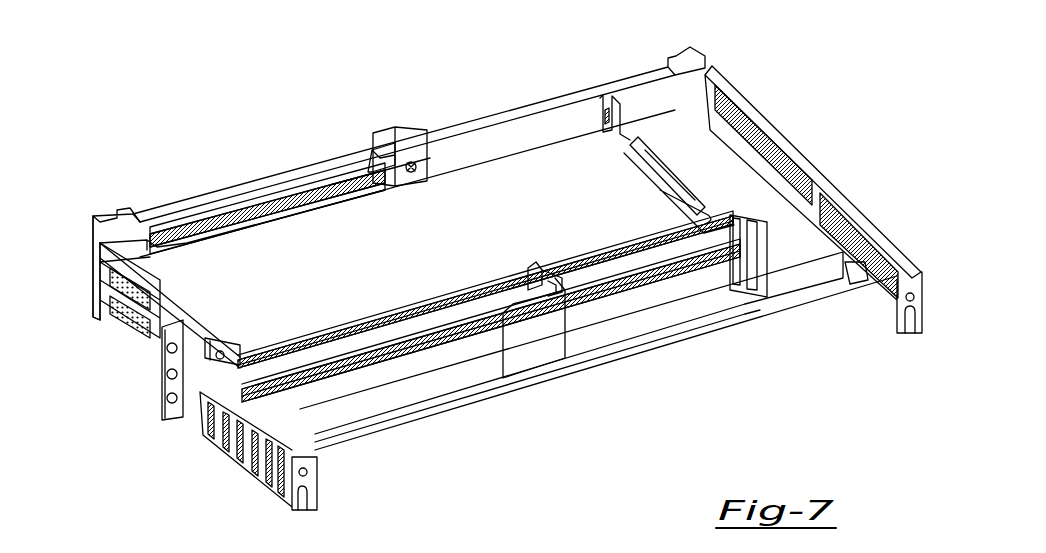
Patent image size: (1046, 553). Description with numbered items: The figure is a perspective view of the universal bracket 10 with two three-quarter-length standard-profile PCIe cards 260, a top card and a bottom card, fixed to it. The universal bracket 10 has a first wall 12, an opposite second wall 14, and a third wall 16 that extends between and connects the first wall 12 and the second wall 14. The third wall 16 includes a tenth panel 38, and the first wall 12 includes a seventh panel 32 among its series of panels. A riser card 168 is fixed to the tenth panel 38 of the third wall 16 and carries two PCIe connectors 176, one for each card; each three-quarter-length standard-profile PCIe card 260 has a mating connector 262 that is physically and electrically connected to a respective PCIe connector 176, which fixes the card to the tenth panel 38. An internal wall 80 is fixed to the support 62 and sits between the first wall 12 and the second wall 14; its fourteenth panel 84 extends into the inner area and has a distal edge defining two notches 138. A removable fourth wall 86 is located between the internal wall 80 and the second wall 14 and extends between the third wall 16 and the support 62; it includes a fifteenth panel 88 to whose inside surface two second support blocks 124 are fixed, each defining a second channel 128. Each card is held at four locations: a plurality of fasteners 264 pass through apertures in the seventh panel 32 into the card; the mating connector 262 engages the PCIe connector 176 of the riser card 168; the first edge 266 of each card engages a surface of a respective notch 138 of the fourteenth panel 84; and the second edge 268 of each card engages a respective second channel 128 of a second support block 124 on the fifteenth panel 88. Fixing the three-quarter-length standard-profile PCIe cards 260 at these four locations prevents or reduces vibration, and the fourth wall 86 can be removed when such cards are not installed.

The universal bracket 10 is at (545, 106).
The first wall 12 is at (110, 312).
The second wall 14 is at (812, 146).
The third wall 16 is at (480, 108).
The seventh panel 32 is at (200, 385).
The tenth panel 38 is at (165, 238).
The support 62 is at (655, 340).
The internal wall 80 is at (534, 342).
The fourteenth panel 84 is at (560, 276).
The fourth wall 86 is at (765, 315).
The fifteenth panel 88 is at (607, 100).
The second support block 124 is at (662, 152).
The second channel 128 is at (690, 205).
The notch 138 is at (531, 268).
The riser card 168 is at (378, 160).
The PCIe connector 176 is at (305, 200).
The three-quarter-length standard-profile PCIe card 260 is at (333, 385).
The mating connector 262 is at (392, 168).
The fastener 264 is at (218, 348).
The first edge 266 is at (445, 325).
The second edge 268 is at (748, 205).